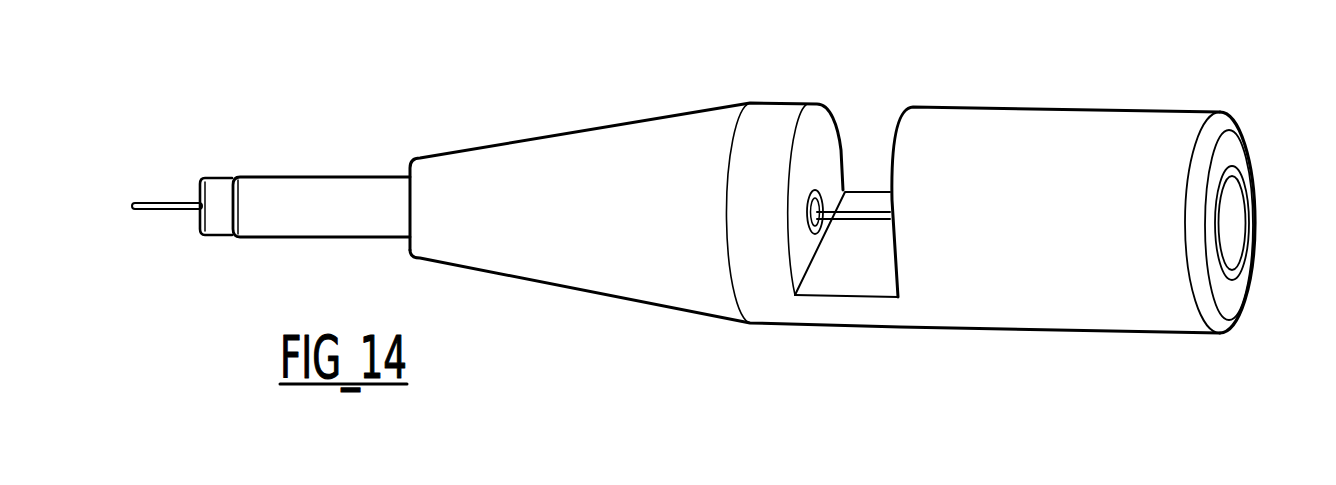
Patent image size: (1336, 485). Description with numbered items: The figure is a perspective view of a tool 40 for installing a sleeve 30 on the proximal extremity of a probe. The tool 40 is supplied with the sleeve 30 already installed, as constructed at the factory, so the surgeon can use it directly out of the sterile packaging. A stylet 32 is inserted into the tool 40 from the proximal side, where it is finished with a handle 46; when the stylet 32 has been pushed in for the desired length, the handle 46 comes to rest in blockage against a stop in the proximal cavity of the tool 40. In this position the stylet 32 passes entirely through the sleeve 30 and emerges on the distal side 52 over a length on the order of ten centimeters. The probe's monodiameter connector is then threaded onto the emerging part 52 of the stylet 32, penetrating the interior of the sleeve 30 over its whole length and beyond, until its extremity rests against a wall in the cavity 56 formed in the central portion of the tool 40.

The sleeve 30 is at (353, 193).
The stylet 32 is at (860, 208).
The tool 40 is at (760, 120).
The handle 46 is at (1228, 233).
The distal side 52 is at (158, 202).
The cavity 56 is at (849, 142).